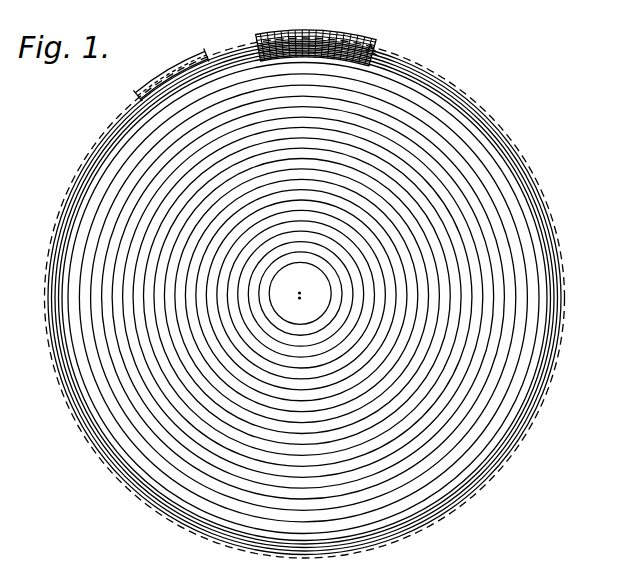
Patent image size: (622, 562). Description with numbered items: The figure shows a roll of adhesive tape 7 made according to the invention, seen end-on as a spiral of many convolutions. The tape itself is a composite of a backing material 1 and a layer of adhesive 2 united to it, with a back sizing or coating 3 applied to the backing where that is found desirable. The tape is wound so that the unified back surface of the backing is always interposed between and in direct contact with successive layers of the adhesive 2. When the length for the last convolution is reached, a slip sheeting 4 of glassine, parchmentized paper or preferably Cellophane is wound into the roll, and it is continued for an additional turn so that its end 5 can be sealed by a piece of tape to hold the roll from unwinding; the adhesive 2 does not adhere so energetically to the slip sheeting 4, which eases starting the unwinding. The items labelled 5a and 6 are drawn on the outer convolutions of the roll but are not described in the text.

The backing material 1 is at (356, 36).
The layer of adhesive 2 is at (371, 44).
The back sizing or coating 3 is at (377, 50).
The slip sheeting 4 is at (383, 56).
The end 5 is at (258, 42).
The outer casing band 5a is at (90, 151).
The retaining clip 6 is at (140, 86).
The roll of tape 7 is at (537, 276).